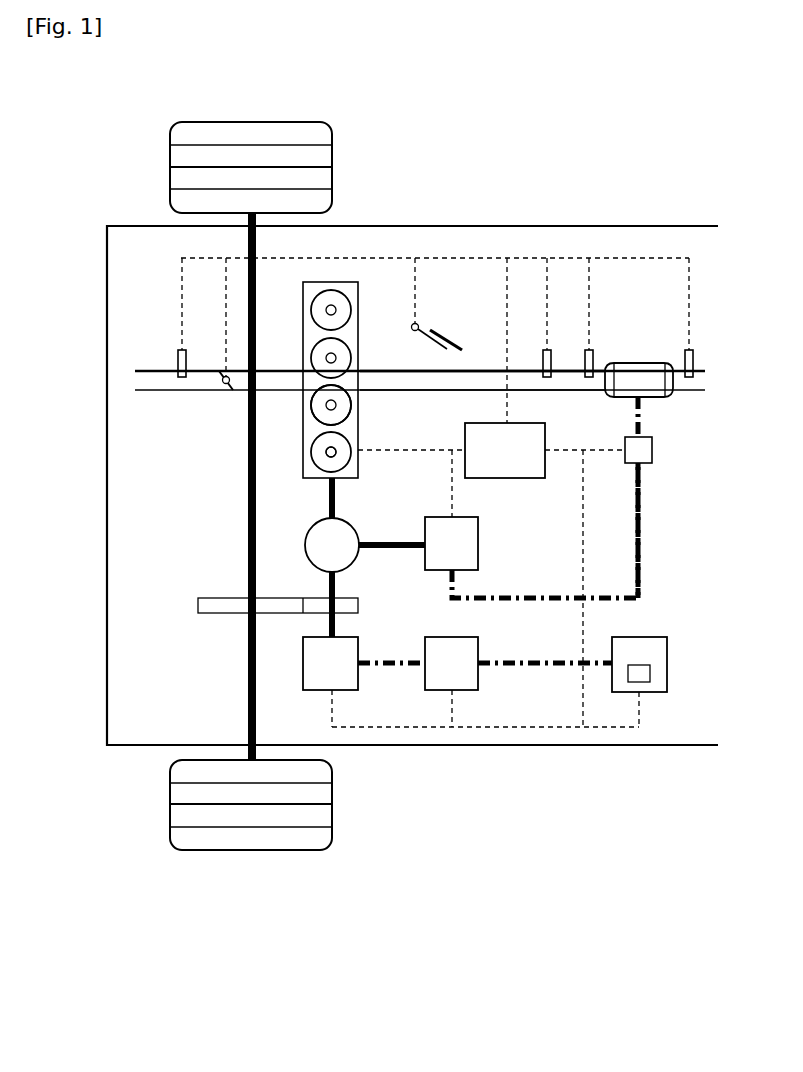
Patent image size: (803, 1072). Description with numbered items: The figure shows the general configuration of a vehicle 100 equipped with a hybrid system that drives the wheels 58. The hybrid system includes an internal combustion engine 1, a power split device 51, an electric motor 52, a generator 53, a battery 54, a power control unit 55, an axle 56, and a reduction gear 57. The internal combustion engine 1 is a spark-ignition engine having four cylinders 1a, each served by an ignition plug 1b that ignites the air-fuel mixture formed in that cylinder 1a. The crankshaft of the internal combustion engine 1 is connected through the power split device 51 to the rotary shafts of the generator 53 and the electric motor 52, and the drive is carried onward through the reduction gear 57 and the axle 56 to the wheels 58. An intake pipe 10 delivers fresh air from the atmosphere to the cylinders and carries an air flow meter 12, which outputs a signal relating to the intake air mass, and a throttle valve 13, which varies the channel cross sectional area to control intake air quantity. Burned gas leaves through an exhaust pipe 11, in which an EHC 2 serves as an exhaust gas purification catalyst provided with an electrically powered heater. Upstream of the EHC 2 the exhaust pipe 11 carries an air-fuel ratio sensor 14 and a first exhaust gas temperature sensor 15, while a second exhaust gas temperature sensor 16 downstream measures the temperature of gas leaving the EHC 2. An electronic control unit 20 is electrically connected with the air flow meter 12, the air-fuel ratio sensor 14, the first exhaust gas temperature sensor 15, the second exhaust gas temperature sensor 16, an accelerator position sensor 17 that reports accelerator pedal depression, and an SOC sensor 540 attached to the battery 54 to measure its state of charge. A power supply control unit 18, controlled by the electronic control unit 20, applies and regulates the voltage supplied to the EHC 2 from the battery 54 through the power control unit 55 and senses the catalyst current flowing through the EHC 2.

The internal combustion engine 1 is at (330, 282).
The cylinder 1a is at (312, 410).
The ignition plug 1b is at (327, 452).
The EHC 2 is at (638, 363).
The intake pipe 10 is at (143, 371).
The exhaust pipe 11 is at (467, 371).
The air flow meter 12 is at (178, 352).
The throttle valve 13 is at (223, 386).
The air-fuel ratio sensor 14 is at (551, 362).
The first exhaust gas temperature sensor 15 is at (593, 362).
The second exhaust gas temperature sensor 16 is at (693, 360).
The accelerator position sensor 17 is at (412, 330).
The power supply control unit 18 is at (653, 454).
The electronic control unit 20 is at (465, 436).
The power split device 51 is at (356, 560).
The electric motor 52 is at (359, 657).
The generator 53 is at (479, 547).
The battery 54 is at (660, 637).
The power control unit 55 is at (479, 680).
The axle 56 is at (248, 667).
The reduction gear 57 is at (230, 598).
The wheel 58 is at (250, 122).
The vehicle 100 is at (505, 226).
The SOC sensor 540 is at (651, 672).